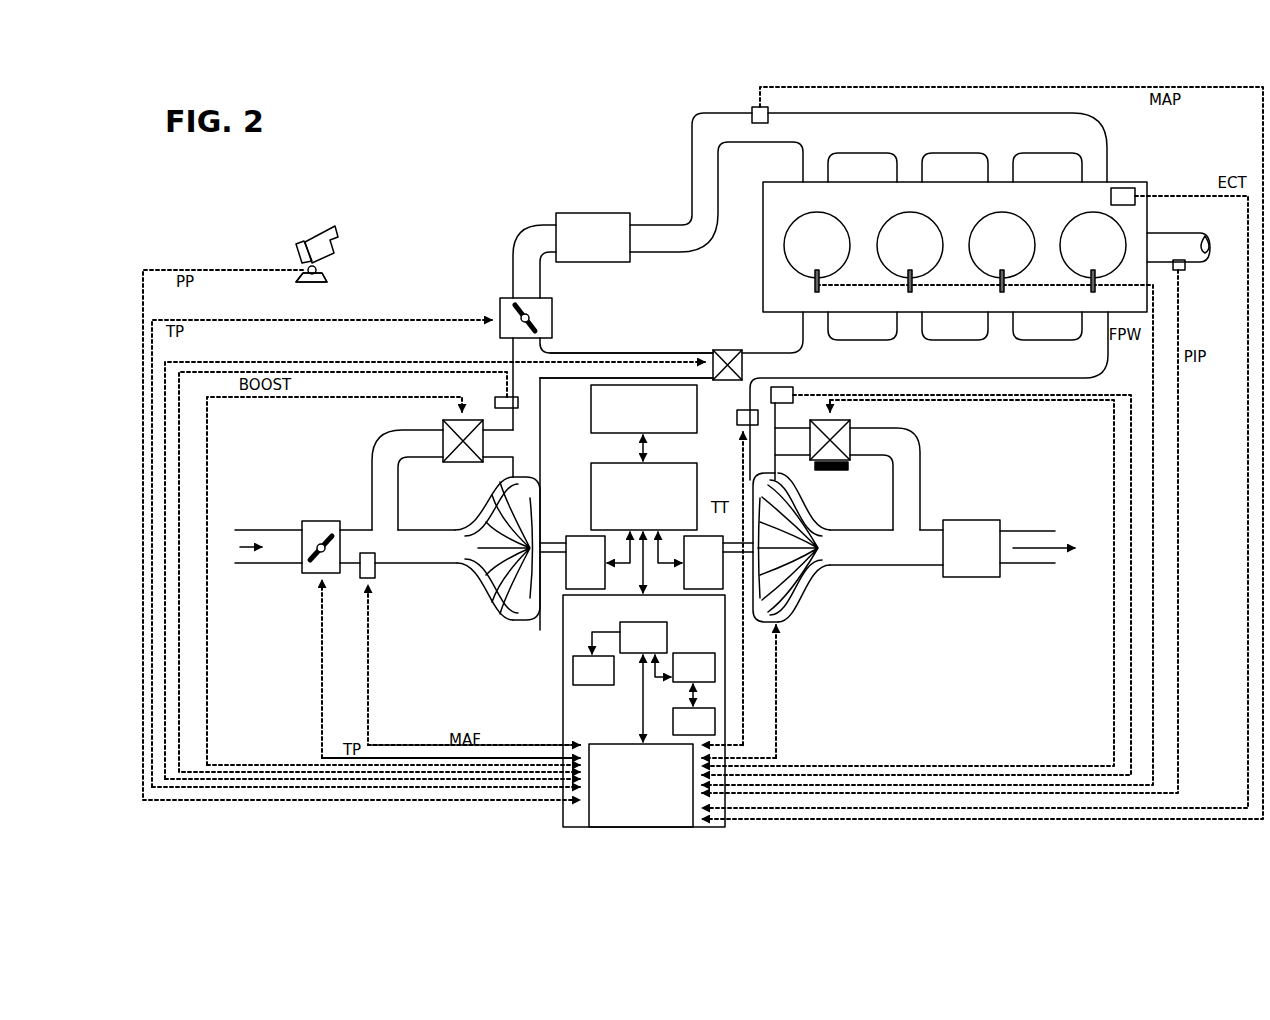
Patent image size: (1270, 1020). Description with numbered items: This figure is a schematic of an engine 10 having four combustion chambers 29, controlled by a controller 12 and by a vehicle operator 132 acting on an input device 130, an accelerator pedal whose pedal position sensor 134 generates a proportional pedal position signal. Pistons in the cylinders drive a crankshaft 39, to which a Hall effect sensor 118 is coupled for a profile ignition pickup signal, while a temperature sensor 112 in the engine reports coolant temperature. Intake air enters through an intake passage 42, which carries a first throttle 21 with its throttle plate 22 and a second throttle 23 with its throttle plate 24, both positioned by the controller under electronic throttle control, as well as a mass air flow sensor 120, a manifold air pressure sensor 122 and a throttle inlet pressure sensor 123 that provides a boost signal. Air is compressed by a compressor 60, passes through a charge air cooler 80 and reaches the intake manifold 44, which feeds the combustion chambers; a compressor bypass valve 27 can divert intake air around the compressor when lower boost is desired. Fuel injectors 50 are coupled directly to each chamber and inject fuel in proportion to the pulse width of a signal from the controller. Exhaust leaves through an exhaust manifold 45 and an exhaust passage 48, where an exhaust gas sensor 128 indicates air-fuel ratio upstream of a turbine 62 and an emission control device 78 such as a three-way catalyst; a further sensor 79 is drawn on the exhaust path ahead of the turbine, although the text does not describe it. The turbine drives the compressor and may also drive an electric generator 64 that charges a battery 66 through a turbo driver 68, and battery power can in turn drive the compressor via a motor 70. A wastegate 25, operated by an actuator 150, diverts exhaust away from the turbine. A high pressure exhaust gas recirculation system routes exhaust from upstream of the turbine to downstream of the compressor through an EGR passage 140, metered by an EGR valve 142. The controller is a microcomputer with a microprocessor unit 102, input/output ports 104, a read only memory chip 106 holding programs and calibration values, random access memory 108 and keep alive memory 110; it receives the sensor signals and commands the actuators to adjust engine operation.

The engine 10 is at (955, 247).
The controller 12 is at (644, 711).
The throttle 21 is at (315, 521).
The throttle plate 22 is at (328, 536).
The throttle 23 is at (512, 298).
The throttle plate 24 is at (540, 322).
The wastegate 25 is at (850, 430).
The compressor bypass valve 27 is at (443, 430).
The combustion chamber 29 is at (955, 245).
The crankshaft 39 is at (1185, 233).
The intake passage 42 is at (268, 546).
The intake manifold 44 is at (810, 205).
The exhaust manifold 45 is at (925, 396).
The exhaust passage 48 is at (886, 547).
The fuel injector 50 is at (815, 290).
The compressor 60 is at (497, 587).
The turbine 62 is at (793, 505).
The electric generator 64 is at (703, 562).
The battery 66 is at (591, 415).
The turbo driver 68 is at (670, 463).
The motor 70 is at (585, 562).
The emission control device 78 is at (1009, 548).
The temperature sensor 79 is at (737, 417).
The charge air cooler 80 is at (575, 213).
The microprocessor unit 102 is at (617, 632).
The input/output ports 104 is at (641, 785).
The read only memory chip 106 is at (573, 672).
The random access memory 108 is at (680, 653).
The keep alive memory 110 is at (673, 722).
The temperature sensor 112 is at (1125, 188).
The Hall effect sensor 118 is at (1182, 270).
The mass air flow sensor 120 is at (376, 570).
The manifold air pressure sensor 122 is at (752, 110).
The throttle inlet pressure sensor 123 is at (497, 397).
The exhaust gas sensor 128 is at (793, 395).
The input device 130 is at (300, 258).
The vehicle operator 132 is at (338, 243).
The pedal position sensor 134 is at (318, 270).
The EGR passage 140 is at (625, 358).
The EGR valve 142 is at (735, 352).
The actuator 150 is at (838, 470).